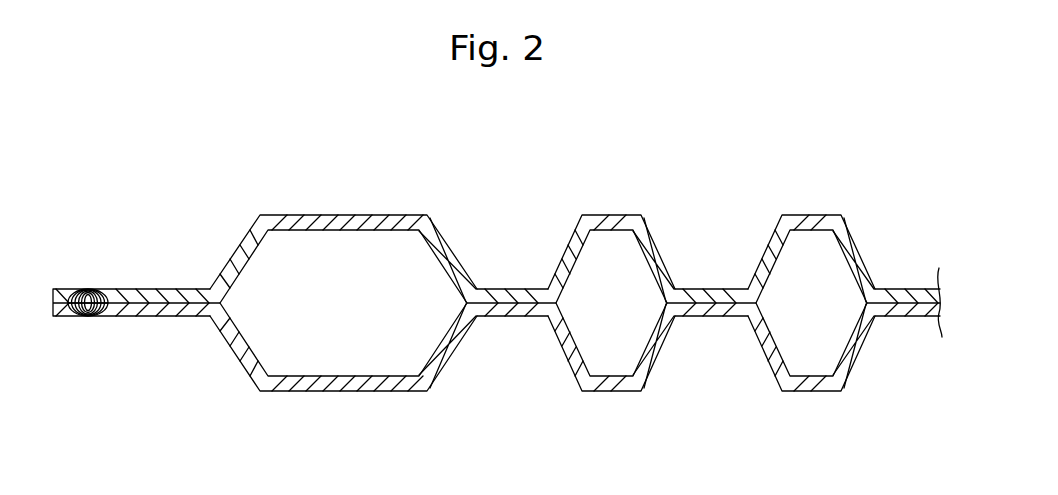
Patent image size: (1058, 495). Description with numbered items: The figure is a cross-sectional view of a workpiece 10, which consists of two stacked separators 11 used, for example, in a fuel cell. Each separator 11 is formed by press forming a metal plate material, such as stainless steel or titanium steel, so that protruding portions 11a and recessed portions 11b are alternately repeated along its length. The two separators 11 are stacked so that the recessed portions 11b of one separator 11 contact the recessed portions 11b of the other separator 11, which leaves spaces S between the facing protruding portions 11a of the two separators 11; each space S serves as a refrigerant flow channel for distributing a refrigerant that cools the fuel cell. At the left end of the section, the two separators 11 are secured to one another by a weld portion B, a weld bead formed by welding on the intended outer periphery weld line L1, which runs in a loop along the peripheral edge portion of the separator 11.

The workpiece 10 is at (244, 238).
The separator 11 is at (136, 302).
The protruding portion 11a is at (542, 303).
The recessed portion 11b is at (704, 303).
The intended outer periphery weld line L1 is at (88, 264).
The weld portion B is at (88, 334).
The space S is at (360, 312).